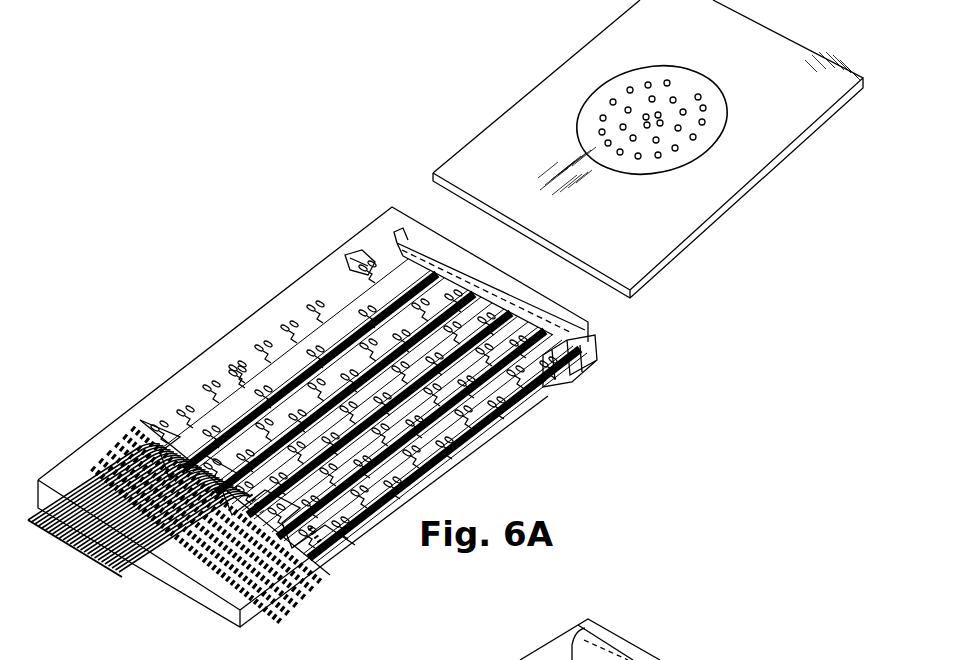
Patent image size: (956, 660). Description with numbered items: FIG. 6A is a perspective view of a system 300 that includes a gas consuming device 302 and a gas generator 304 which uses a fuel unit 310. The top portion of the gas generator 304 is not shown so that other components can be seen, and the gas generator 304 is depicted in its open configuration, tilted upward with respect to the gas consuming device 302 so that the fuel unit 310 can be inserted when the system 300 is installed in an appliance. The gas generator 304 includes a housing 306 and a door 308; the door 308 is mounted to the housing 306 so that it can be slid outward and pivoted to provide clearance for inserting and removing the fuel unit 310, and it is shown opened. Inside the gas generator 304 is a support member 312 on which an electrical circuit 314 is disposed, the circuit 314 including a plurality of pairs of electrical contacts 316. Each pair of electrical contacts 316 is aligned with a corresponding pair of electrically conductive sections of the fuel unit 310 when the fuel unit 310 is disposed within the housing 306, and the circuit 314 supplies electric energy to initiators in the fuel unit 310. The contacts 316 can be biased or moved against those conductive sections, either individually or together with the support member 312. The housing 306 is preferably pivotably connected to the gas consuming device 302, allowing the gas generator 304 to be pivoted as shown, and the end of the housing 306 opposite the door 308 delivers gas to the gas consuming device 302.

The system 300 is at (292, 138).
The gas consuming device 302 is at (58, 470).
The gas generator 304 is at (172, 386).
The housing 306 is at (447, 470).
The door 308 is at (600, 372).
The fuel unit 310 is at (757, 180).
The support member 312 is at (345, 322).
The electrical circuit 314 is at (300, 350).
The electrical contacts 316 is at (258, 398).